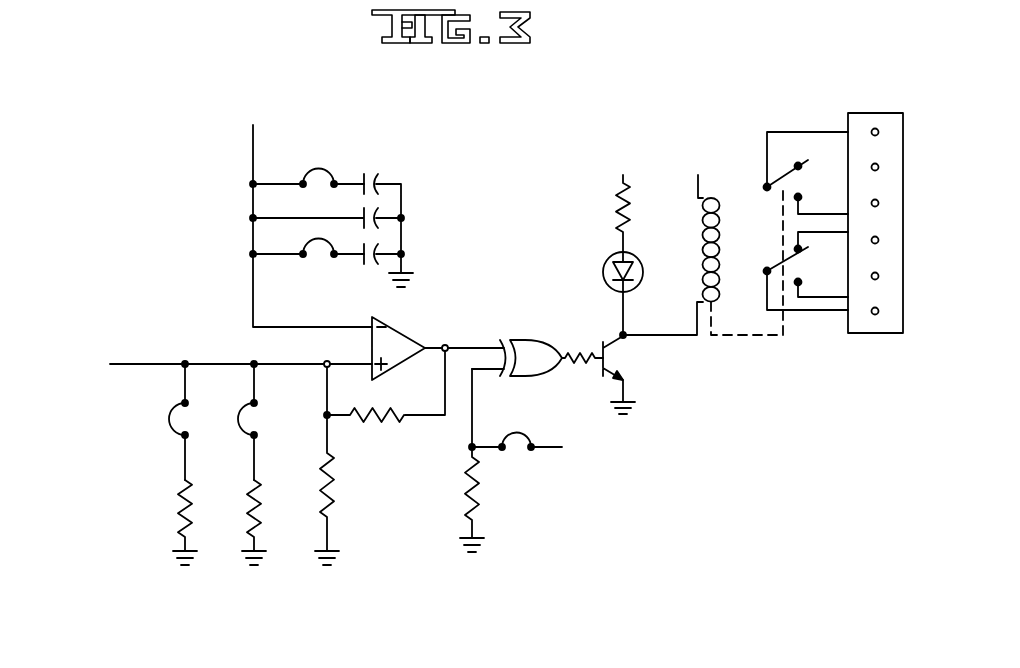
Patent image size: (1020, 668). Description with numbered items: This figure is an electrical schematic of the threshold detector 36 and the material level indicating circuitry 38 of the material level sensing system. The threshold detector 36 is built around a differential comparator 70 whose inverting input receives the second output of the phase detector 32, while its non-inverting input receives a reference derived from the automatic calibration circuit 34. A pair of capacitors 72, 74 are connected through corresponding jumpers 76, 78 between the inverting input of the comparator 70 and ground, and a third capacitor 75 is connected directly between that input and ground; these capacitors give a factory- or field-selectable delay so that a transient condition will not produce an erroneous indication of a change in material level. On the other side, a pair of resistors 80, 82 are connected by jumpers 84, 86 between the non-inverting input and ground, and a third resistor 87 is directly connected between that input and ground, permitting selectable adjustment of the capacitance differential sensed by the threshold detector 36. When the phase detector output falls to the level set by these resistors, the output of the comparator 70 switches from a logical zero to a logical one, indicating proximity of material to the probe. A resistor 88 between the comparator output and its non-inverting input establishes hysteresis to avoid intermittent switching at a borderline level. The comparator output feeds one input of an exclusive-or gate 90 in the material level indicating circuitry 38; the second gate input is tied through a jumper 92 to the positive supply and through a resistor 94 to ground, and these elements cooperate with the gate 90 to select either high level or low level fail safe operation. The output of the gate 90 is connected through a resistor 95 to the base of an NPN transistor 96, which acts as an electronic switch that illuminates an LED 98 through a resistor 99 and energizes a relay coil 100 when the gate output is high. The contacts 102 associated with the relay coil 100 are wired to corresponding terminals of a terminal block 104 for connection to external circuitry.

The phase detector 32 is at (278, 197).
The automatic calibration circuit 34 is at (206, 379).
The threshold detector 36 is at (194, 291).
The material level indicating circuitry 38 is at (631, 139).
The differential comparator 70 is at (406, 330).
The capacitor 72 is at (372, 170).
The capacitor 74 is at (376, 265).
The third capacitor 75 is at (360, 214).
The jumper 76 is at (328, 170).
The jumper 78 is at (318, 241).
The resistor 80 is at (181, 511).
The resistor 82 is at (259, 506).
The jumper 84 is at (172, 419).
The jumper 86 is at (240, 420).
The third resistor 87 is at (337, 488).
The resistor 88 is at (376, 418).
The exclusive-or gate 90 is at (538, 346).
The jumper 92 is at (517, 438).
The resistor 94 is at (481, 490).
The resistor 95 is at (586, 343).
The NPN transistor 96 is at (622, 360).
The LED 98 is at (603, 268).
The resistor 99 is at (616, 212).
The relay coil 100 is at (704, 250).
The contacts 102 is at (770, 226).
The terminal block 104 is at (880, 112).